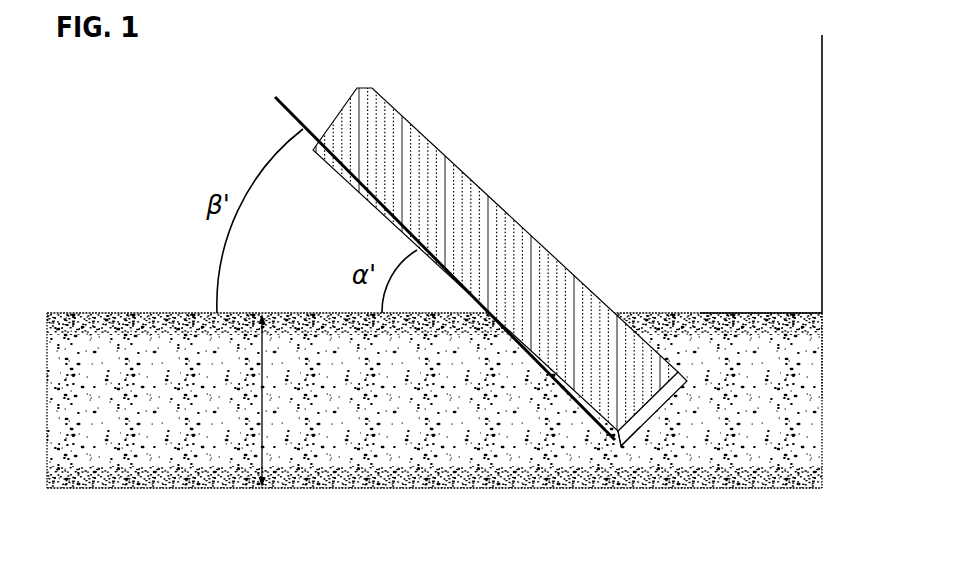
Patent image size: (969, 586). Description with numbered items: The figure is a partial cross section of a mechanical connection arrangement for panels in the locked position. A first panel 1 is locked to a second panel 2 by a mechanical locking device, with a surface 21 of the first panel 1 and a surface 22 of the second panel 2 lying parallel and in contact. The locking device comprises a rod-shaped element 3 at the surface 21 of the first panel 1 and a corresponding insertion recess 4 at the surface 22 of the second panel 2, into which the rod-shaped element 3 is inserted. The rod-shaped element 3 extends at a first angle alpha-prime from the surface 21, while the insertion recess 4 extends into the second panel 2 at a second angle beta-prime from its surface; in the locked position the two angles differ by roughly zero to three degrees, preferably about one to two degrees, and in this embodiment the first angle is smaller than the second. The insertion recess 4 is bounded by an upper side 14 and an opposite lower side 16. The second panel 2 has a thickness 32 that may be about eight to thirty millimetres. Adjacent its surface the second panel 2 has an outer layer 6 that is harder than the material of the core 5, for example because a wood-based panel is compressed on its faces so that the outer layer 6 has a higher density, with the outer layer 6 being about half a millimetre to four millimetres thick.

The first panel 1 is at (660, 184).
The second panel 2 is at (126, 402).
The rod-shaped element 3 is at (452, 168).
The insertion recess 4 is at (612, 440).
The core 5 is at (224, 410).
The outer layer 6 is at (62, 322).
The upper side 14 is at (673, 373).
The lower side 16 is at (546, 375).
The surface 21 is at (770, 317).
The surface 22 is at (718, 312).
The thickness 32 is at (281, 400).